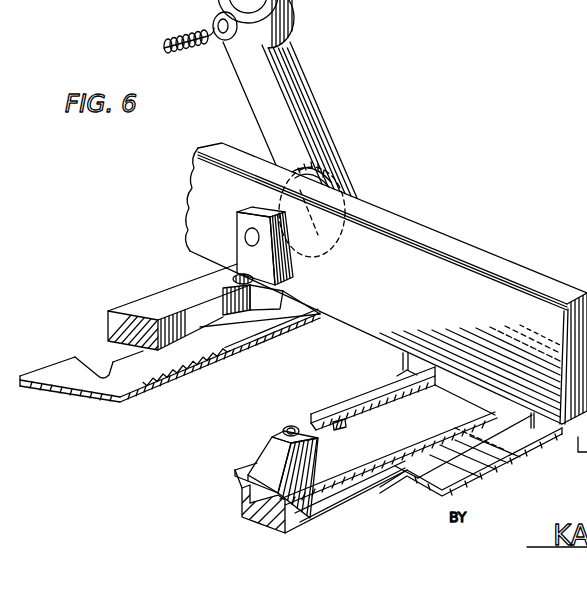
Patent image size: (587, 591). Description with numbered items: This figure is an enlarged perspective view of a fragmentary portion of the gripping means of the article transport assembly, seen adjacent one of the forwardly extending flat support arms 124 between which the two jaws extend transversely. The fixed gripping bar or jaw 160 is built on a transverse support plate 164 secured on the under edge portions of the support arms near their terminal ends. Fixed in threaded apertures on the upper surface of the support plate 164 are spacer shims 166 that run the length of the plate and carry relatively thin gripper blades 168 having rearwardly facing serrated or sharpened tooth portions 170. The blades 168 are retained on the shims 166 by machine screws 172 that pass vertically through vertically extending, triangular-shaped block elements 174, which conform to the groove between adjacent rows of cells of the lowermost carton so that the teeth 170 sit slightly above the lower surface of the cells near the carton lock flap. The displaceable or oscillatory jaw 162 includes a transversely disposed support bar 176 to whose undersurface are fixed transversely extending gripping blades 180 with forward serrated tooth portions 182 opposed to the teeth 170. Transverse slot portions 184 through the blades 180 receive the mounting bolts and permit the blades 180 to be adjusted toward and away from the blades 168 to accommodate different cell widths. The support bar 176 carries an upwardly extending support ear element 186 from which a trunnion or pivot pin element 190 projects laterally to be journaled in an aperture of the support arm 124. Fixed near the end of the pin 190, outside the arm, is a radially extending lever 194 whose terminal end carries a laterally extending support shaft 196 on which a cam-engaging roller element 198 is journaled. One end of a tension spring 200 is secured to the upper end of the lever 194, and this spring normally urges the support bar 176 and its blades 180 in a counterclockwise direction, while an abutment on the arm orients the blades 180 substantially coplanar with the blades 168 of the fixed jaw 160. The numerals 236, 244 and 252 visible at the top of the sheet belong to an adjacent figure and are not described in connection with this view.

The support arm 124 is at (522, 280).
The fixed gripping bar or jaw 160 is at (452, 488).
The displaceable or oscillatory jaw 162 is at (134, 300).
The transverse support plate 164 is at (493, 445).
The spacer shims 166 is at (272, 512).
The gripper blades 168 is at (400, 439).
The serrated tooth portions 170 is at (336, 422).
The machine screws 172 is at (289, 426).
The triangular-shaped block elements 174 is at (263, 455).
The support bar 176 is at (178, 295).
The gripping blades 180 is at (231, 354).
The serrated tooth portions 182 is at (176, 385).
The transverse slot portions 184 is at (78, 356).
The support ear element 186 is at (240, 225).
The trunnion or pivot pin element 190 is at (308, 256).
The radially extending lever 194 is at (297, 100).
The laterally extending support shaft 196 is at (226, 41).
The cam-engaging roller element 198 is at (296, 24).
The tension spring 200 is at (176, 33).
The element of adjacent figure 236 is at (437, 14).
The element of adjacent figure 244 is at (502, 14).
The element of adjacent figure 252 is at (562, 14).